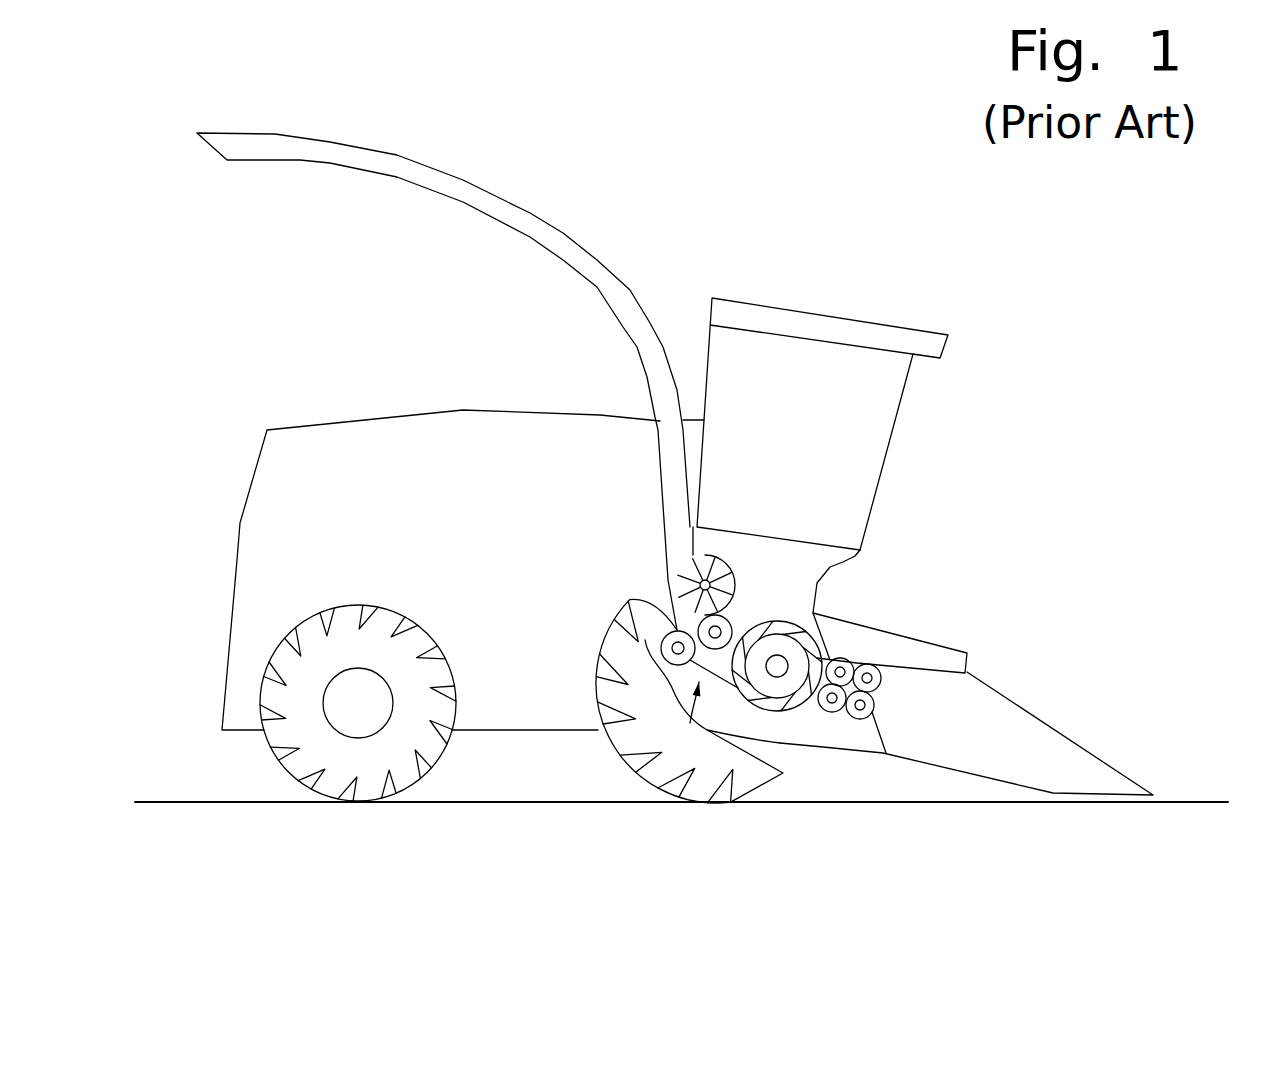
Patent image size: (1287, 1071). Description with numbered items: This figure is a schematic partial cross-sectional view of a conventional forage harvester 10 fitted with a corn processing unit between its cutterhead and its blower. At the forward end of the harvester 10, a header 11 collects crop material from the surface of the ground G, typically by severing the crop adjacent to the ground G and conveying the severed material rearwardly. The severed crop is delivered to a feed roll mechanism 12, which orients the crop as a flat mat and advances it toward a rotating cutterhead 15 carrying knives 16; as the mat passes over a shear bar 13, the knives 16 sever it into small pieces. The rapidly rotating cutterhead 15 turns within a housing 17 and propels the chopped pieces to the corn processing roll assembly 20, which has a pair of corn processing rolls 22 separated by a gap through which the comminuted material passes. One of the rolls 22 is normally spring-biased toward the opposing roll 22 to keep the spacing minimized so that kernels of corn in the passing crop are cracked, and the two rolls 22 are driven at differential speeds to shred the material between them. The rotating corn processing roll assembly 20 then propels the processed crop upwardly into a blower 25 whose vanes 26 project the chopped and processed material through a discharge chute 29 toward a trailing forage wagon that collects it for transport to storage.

The forage harvester 10 is at (1012, 372).
The header 11 is at (1010, 718).
The feed roll mechanism 12 is at (887, 655).
The shear bar 13 is at (832, 714).
The cutterhead 15 is at (827, 637).
The knives 16 is at (797, 627).
The housing 17 is at (767, 622).
The corn processing roll assembly 20 is at (617, 782).
The corn processing rolls 22 is at (663, 640).
The blower 25 is at (716, 548).
The vanes 26 is at (685, 577).
The discharge chute 29 is at (560, 259).
The ground G is at (1190, 802).